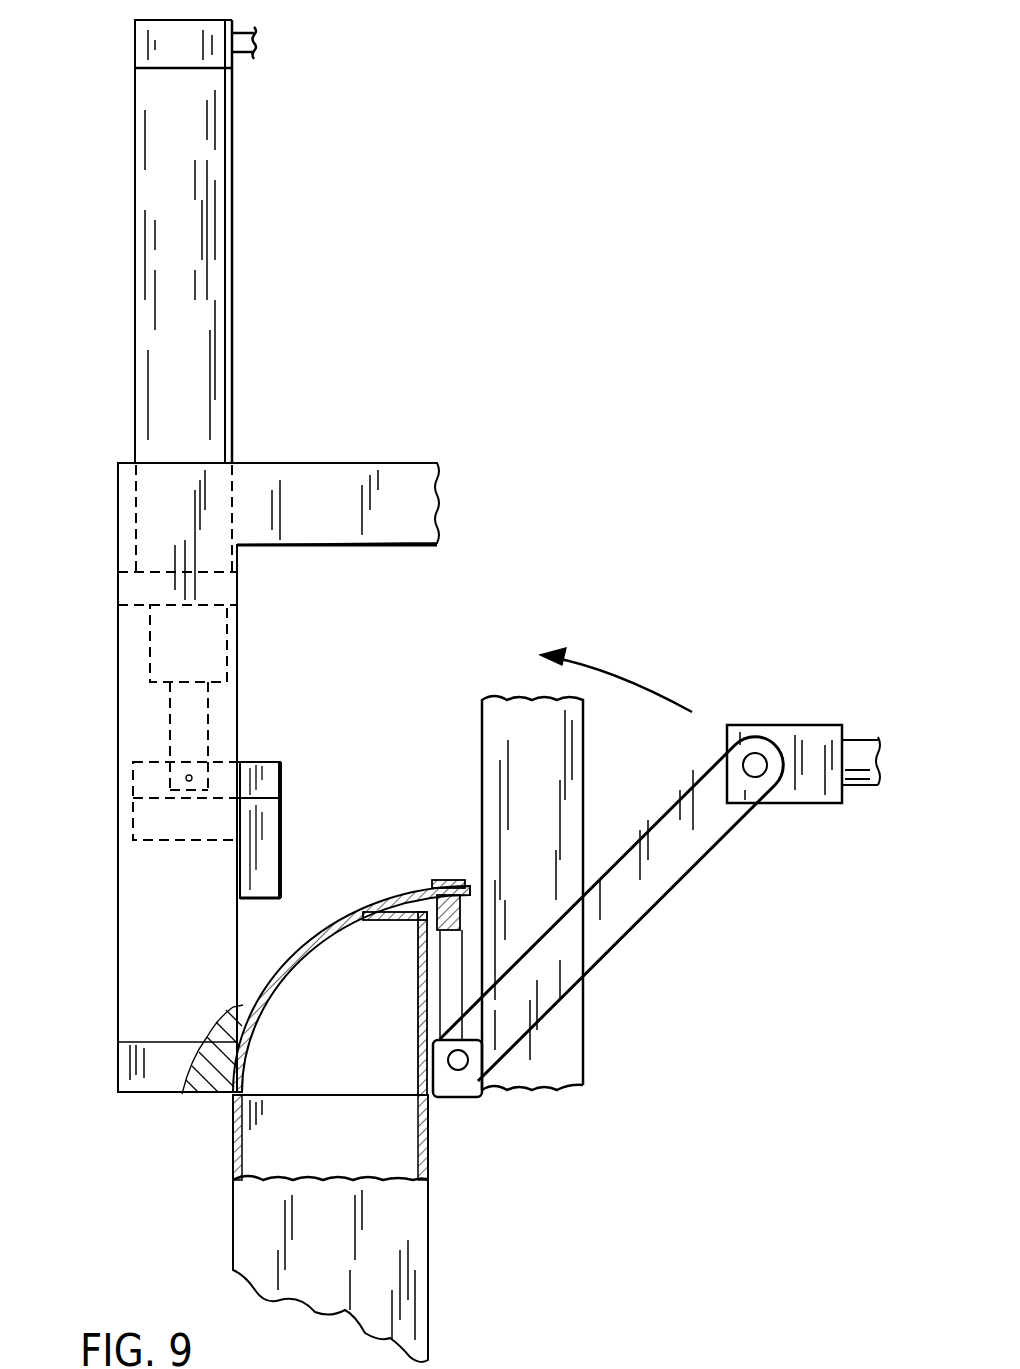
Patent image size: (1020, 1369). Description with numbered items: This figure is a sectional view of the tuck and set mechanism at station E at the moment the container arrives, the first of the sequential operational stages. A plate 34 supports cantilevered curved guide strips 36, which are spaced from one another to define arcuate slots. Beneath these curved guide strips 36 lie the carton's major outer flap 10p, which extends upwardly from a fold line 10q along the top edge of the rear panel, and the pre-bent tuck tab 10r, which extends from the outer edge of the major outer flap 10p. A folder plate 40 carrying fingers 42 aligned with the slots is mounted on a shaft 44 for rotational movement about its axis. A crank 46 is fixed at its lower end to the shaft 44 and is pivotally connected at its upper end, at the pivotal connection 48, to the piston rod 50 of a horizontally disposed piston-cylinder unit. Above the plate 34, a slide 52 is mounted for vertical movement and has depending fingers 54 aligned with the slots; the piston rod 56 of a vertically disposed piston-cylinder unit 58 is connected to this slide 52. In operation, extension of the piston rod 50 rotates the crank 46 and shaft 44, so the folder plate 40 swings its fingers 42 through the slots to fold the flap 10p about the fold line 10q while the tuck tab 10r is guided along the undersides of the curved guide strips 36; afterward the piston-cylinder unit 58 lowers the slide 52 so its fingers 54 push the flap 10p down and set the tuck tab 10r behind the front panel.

The piston-cylinder unit 58 is at (232, 258).
The piston rod 56 is at (165, 722).
The slide 52 is at (268, 772).
The fingers 54 is at (268, 832).
The plate 34 is at (140, 1052).
The curved guide strips 36 is at (340, 915).
The tuck tab 10r is at (378, 920).
The major outer flap 10p is at (416, 1050).
The fold line 10q is at (415, 1098).
The fingers 42 is at (456, 880).
The shaft 44 is at (460, 1068).
The folder plate 40 is at (497, 938).
The crank 46 is at (648, 897).
The pivotal connection 48 is at (757, 755).
The piston rod 50 is at (855, 750).